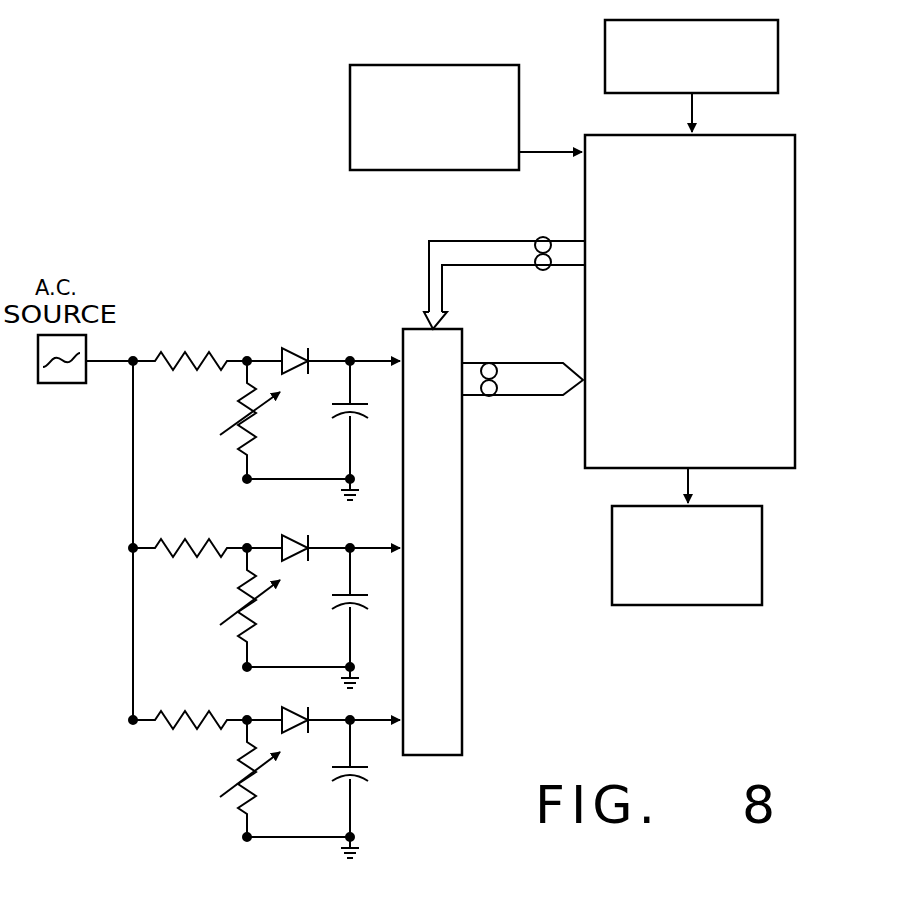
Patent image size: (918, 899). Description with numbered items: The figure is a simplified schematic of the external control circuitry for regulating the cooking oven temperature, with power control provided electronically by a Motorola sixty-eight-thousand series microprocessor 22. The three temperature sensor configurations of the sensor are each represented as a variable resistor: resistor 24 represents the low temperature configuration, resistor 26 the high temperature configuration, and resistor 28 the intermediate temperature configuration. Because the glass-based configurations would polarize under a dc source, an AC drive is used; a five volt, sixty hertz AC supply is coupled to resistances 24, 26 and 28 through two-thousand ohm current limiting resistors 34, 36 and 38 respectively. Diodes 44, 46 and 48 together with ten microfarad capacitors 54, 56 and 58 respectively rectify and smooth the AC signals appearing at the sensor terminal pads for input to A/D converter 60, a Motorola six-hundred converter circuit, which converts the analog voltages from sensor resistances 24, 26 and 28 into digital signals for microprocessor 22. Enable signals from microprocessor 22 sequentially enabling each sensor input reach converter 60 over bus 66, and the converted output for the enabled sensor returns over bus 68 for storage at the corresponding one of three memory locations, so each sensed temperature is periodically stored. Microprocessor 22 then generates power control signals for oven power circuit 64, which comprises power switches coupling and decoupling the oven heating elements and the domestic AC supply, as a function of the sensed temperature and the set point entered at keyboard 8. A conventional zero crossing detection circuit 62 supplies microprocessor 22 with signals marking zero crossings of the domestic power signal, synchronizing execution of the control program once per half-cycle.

The keyboard 8 is at (780, 68).
The microprocessor 22 is at (795, 312).
The resistor 24 is at (240, 397).
The resistor 26 is at (235, 590).
The resistor 28 is at (237, 753).
The current limiting resistor 34 is at (167, 347).
The current limiting resistor 36 is at (186, 503).
The current limiting resistor 38 is at (192, 678).
The diode 44 is at (298, 345).
The diode 46 is at (320, 531).
The diode 48 is at (308, 730).
The capacitor 54 is at (337, 398).
The capacitor 56 is at (343, 606).
The capacitor 58 is at (365, 782).
The A/D converter 60 is at (462, 687).
The zero crossing detection circuit 62 is at (458, 63).
The oven power circuit 64 is at (762, 583).
The bus 66 is at (450, 238).
The bus 68 is at (522, 397).